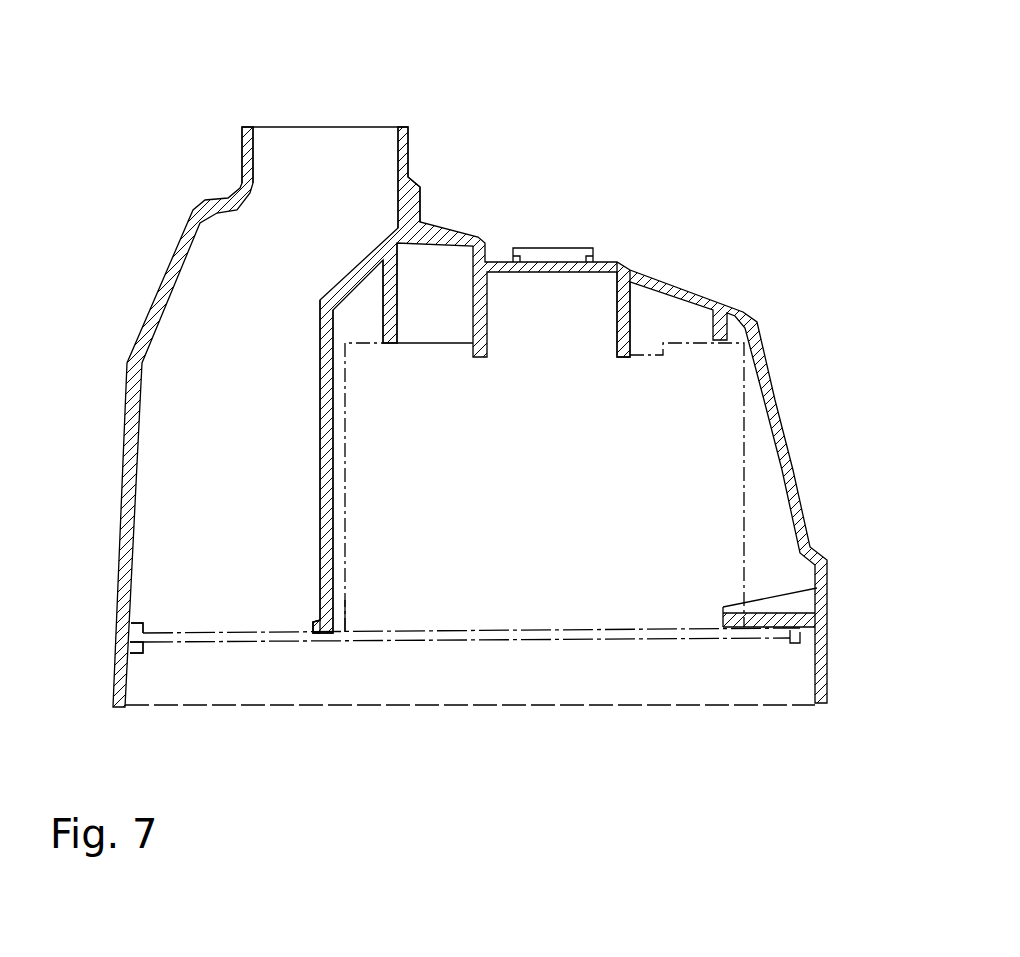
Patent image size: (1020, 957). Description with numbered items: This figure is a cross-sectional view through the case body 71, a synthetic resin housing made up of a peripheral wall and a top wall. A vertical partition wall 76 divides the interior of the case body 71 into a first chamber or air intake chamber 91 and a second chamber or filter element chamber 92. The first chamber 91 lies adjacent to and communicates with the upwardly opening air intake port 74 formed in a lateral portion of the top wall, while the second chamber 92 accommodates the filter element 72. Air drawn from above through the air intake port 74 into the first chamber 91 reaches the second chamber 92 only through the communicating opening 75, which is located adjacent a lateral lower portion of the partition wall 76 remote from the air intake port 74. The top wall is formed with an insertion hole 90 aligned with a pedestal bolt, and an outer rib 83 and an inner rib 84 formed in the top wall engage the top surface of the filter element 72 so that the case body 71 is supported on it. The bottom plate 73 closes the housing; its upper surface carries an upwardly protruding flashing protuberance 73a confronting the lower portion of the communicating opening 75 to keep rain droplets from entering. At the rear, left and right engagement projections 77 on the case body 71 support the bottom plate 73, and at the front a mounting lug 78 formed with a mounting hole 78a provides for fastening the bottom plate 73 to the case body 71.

The case body 71 is at (800, 355).
The filter element 72 is at (747, 472).
The bottom plate 73 is at (452, 642).
The flashing protuberance 73a is at (313, 623).
The air intake port 74 is at (256, 144).
The communicating opening 75 is at (350, 632).
The vertical partition wall 76 is at (320, 393).
The engagement projections 77 is at (135, 625).
The mounting lugs 78 is at (723, 630).
The mounting hole 78a is at (760, 628).
The outer rib 83 is at (397, 287).
The inner rib 84 is at (627, 321).
The insertion hole 90 is at (582, 249).
The first chamber 91 is at (184, 488).
The second chamber 92 is at (504, 488).